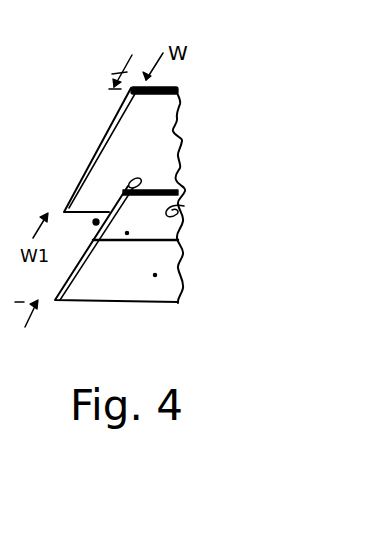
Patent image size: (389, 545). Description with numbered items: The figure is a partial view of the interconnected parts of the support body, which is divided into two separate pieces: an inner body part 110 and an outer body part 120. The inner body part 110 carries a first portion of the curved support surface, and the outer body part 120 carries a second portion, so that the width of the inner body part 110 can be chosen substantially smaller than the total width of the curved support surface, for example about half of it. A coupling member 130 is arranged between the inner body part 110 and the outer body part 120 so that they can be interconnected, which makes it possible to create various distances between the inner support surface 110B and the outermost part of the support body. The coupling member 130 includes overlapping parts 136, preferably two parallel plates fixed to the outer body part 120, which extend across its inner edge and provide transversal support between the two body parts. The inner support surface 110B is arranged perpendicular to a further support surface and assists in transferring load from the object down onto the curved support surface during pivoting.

The inner body part 110 is at (128, 141).
The inner support surface 110B is at (163, 90).
The outer body part 120 is at (107, 290).
The coupling member 130 is at (188, 228).
The overlapping parts 136 is at (182, 203).